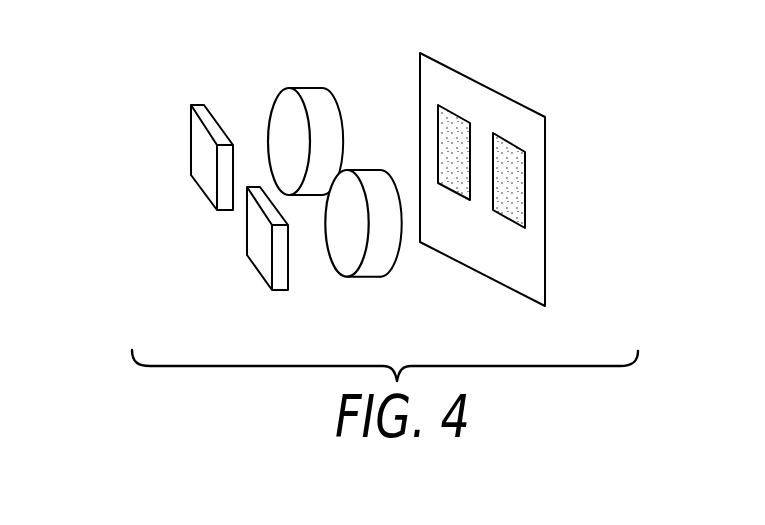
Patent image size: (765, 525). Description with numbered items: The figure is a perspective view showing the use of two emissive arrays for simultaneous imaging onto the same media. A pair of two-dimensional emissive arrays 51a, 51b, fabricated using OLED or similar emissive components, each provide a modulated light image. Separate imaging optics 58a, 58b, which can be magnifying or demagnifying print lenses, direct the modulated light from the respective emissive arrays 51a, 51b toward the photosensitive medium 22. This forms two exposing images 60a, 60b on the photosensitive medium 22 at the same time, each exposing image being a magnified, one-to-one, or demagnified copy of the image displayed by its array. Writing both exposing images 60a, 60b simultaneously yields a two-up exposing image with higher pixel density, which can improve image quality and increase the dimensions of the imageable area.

The two-dimensional emissive array 51a is at (197, 158).
The two-dimensional emissive array 51b is at (250, 256).
The imaging optics 58a is at (299, 87).
The imaging optics 58b is at (363, 168).
The photosensitive medium 22 is at (547, 170).
The exposing image 60a is at (453, 110).
The exposing image 60b is at (510, 138).